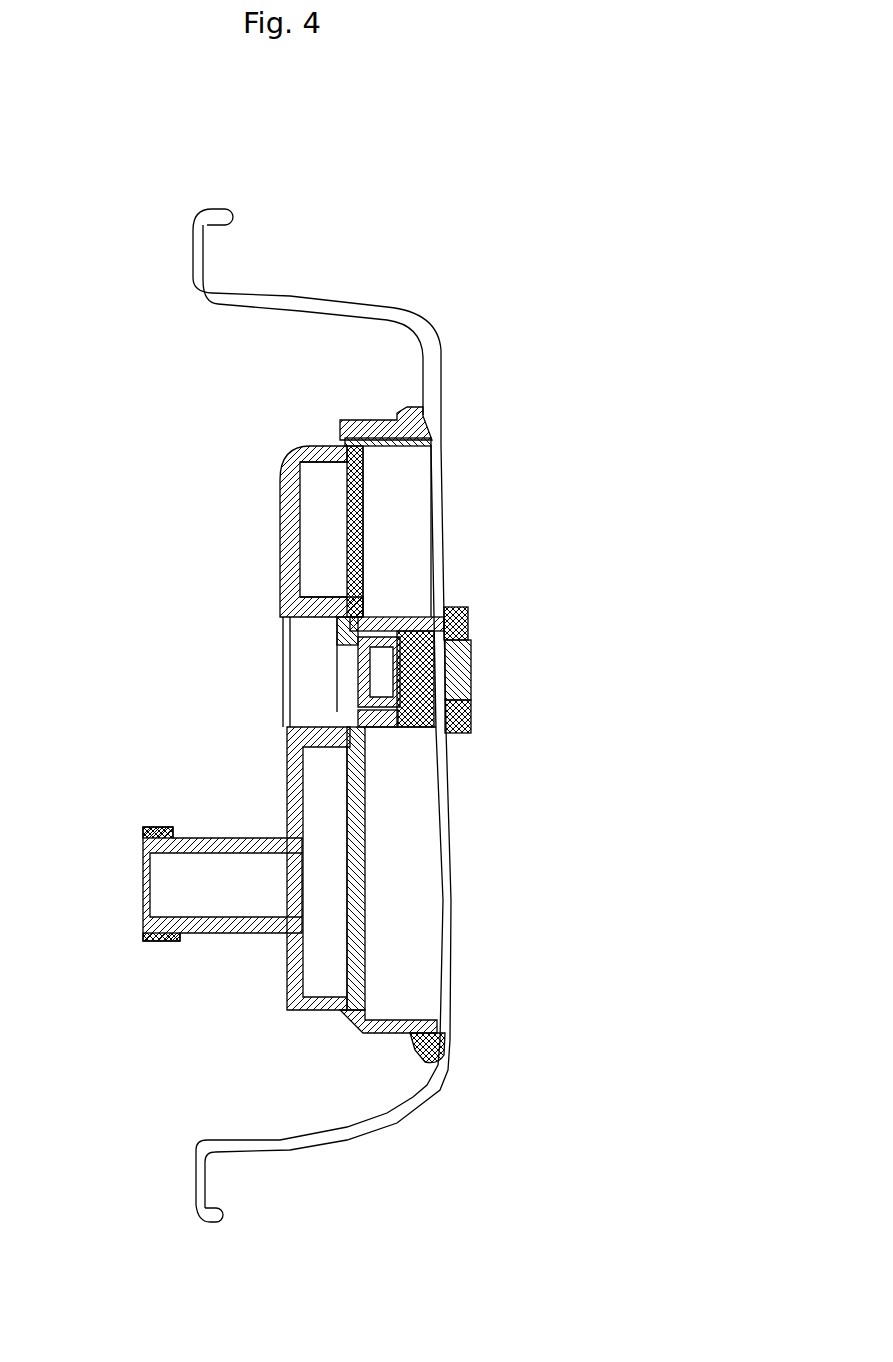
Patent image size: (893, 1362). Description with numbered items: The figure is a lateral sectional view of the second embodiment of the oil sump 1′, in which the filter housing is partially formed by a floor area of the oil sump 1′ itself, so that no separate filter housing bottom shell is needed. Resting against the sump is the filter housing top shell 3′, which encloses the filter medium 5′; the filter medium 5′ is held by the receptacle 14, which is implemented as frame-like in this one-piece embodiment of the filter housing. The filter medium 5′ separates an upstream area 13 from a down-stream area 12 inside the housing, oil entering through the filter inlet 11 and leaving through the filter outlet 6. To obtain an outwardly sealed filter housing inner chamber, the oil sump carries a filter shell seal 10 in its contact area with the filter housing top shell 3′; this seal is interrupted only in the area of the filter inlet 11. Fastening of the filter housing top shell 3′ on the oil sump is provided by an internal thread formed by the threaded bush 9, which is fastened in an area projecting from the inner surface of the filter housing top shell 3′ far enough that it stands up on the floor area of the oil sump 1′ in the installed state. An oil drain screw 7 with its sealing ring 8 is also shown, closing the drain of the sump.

The oil sump 1′ is at (290, 295).
The filter housing top shell 3′ is at (293, 770).
The filter medium 5′ is at (353, 802).
The filter outlet 6 is at (207, 886).
The oil drain screw 7 is at (466, 693).
The sealing ring 8 is at (466, 622).
The threaded bush 9 is at (460, 730).
The filter shell seal 10 is at (430, 1053).
The filter inlet 11 is at (410, 427).
The down-stream area 12 is at (320, 505).
The upstream area 13 is at (403, 548).
The receptacle 14 is at (350, 442).